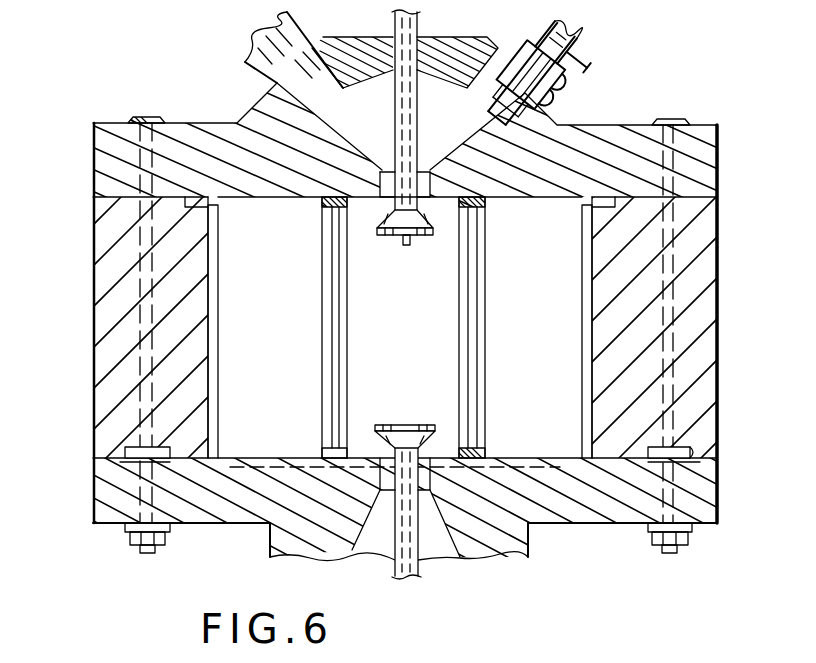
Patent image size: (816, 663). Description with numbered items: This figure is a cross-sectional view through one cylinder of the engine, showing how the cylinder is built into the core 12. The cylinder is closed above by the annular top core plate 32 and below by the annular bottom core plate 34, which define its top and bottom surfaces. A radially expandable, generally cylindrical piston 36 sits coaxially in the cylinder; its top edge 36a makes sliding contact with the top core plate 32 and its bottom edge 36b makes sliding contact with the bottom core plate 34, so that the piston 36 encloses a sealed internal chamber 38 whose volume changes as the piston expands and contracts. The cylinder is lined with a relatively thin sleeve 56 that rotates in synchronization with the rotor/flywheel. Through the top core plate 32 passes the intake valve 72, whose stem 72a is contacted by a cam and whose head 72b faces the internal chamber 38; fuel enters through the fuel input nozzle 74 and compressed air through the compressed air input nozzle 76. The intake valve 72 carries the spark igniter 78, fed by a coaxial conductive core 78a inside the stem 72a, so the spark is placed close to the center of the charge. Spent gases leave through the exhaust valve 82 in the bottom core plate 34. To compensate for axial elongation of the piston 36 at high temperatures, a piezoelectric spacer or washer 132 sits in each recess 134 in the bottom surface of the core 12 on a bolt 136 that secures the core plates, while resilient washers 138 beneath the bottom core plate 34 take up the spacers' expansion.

The core 12 is at (102, 278).
The top core plate 32 is at (598, 146).
The bottom core plate 34 is at (242, 515).
The piston 36 is at (486, 367).
The top edge of piston 36a is at (550, 237).
The bottom edge of piston 36b is at (322, 450).
The internal chamber 38 is at (412, 360).
The sleeve 56 is at (220, 332).
The intake valve 72 is at (420, 24).
The stem of intake valve 72a is at (394, 137).
The head of intake valve 72b is at (420, 248).
The fuel input nozzle 74 is at (576, 56).
The compressed air input nozzle 76 is at (256, 40).
The spark igniter 78 is at (398, 243).
The coaxial conductive core 78a is at (473, 124).
The exhaust valve 82 is at (394, 568).
The piezoelectric spacer or washer 132 is at (120, 464).
The recess 134 is at (128, 450).
The bolt 136 is at (140, 318).
The resilient washer 138 is at (128, 533).